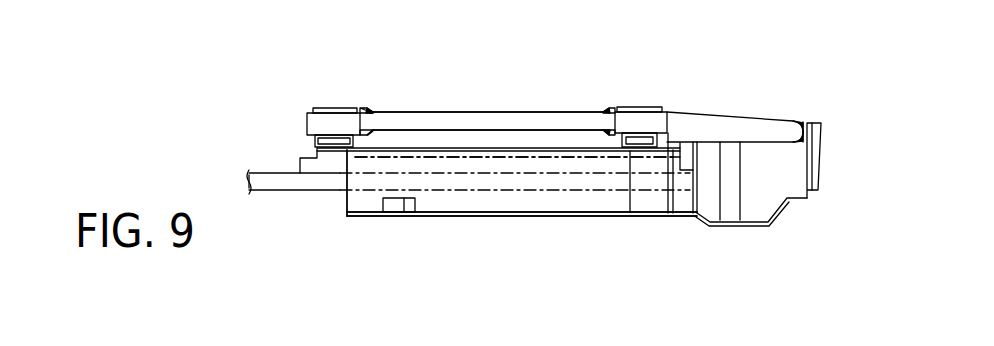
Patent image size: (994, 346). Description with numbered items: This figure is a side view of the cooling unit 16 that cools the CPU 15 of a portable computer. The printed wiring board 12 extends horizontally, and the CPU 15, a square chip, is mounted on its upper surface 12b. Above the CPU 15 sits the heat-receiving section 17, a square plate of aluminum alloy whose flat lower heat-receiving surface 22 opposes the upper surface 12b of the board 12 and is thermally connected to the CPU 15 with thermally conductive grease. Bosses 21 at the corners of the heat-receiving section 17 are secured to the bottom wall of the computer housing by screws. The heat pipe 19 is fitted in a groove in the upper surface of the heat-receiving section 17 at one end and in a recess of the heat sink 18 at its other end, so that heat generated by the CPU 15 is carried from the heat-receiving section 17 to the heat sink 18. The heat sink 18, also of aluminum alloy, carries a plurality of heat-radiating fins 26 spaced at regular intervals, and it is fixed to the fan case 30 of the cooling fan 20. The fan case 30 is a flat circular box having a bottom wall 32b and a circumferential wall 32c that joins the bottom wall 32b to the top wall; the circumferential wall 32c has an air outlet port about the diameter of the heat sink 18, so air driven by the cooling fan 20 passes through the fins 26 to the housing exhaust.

The printed wiring board 12 is at (298, 192).
The upper surface 12b is at (256, 160).
The CPU 15 is at (300, 160).
The cooling unit 16 is at (552, 112).
The heat-receiving section 17 is at (510, 140).
The heat sink 18 is at (750, 210).
The heat pipe 19 is at (757, 118).
The cooling fan 20 is at (460, 210).
The bosses 21 is at (341, 108).
The heat-receiving surface 22 is at (418, 148).
The heat-radiating fins 26 is at (822, 145).
The fan case 30 is at (347, 203).
The bottom wall 32b is at (598, 216).
The circumferential wall 32c is at (523, 195).